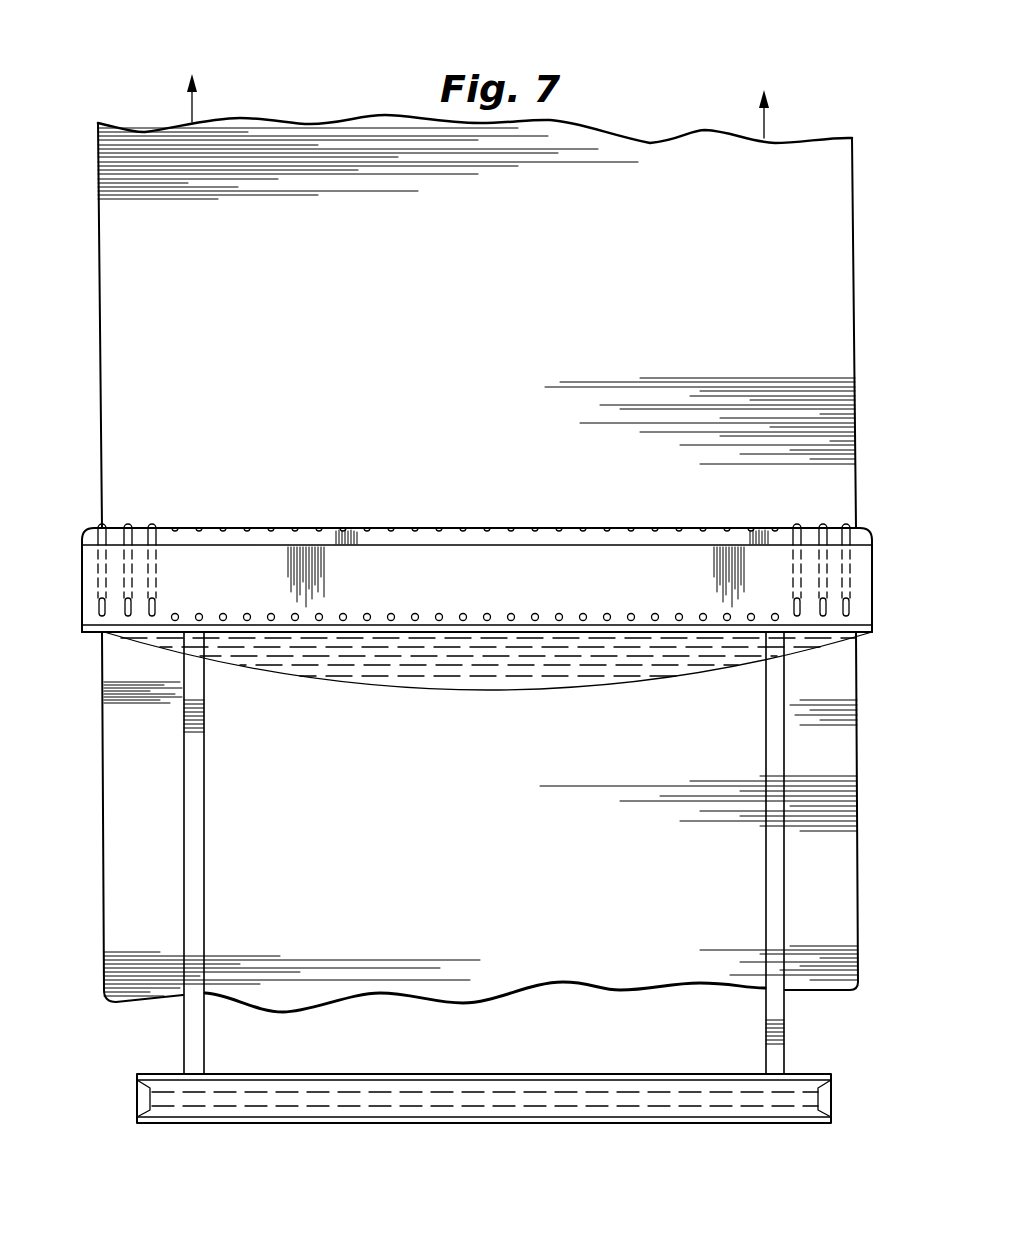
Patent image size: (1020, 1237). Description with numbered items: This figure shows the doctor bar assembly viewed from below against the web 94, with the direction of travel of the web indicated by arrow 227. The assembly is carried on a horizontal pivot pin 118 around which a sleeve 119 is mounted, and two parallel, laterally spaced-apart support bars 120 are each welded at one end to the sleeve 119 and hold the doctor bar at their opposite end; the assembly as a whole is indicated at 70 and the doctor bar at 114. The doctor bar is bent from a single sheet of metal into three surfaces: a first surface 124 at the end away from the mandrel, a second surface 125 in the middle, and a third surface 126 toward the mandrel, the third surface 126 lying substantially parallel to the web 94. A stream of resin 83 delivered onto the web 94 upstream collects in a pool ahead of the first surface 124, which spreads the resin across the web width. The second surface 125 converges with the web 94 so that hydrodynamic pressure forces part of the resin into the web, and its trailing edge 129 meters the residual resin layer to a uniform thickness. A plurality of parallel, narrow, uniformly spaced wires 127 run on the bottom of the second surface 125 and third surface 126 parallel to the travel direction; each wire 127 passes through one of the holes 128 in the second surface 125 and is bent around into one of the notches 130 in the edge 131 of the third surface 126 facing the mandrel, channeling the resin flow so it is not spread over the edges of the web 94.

The frame assembly 70 is at (165, 1014).
The stream of resin 83 is at (446, 688).
The web 94 is at (484, 298).
The clamping bar assembly 114 is at (477, 590).
The horizontal pivot pin 118 is at (484, 1123).
The sleeve 119 is at (390, 1125).
The support bars 120 is at (206, 1050).
The first surface 124 is at (92, 636).
The second surface 125 is at (860, 578).
The third surface 126 is at (696, 538).
The wires 127 is at (100, 526).
The holes 128 is at (178, 632).
The trailing edge 129 is at (868, 549).
The notches 130 is at (342, 532).
The edge 131 is at (574, 530).
The arrow 227 is at (196, 88).